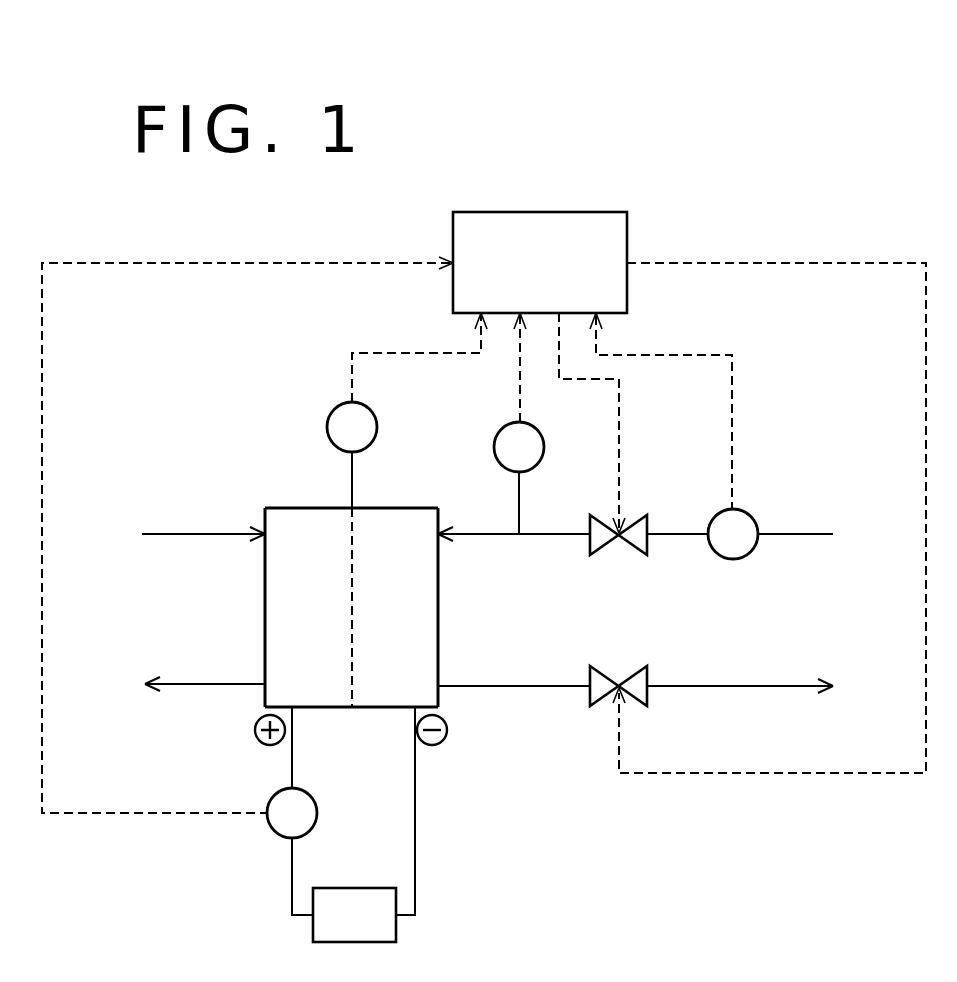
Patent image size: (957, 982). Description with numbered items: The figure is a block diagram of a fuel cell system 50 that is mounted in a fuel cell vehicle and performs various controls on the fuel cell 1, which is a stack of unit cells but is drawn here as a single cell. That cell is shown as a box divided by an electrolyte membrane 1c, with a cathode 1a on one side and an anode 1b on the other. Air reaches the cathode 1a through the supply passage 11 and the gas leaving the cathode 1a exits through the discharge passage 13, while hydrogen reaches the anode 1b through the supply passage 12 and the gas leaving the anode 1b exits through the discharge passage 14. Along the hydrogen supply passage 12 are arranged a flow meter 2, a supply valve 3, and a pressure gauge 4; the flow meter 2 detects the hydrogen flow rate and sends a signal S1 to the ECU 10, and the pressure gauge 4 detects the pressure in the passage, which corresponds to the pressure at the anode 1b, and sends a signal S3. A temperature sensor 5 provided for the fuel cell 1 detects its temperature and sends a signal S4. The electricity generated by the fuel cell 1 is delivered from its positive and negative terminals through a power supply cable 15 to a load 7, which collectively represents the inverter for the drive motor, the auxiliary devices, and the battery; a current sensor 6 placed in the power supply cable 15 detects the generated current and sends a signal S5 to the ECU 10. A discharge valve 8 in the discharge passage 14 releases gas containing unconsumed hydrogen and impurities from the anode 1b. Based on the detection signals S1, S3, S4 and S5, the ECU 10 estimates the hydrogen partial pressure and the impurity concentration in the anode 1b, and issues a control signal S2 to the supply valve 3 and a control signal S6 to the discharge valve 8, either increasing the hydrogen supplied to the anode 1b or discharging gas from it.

The fuel cell 1 is at (318, 478).
The cathode 1a is at (275, 617).
The anode 1b is at (440, 607).
The electrolyte membrane 1c is at (355, 680).
The flow meter 2 is at (734, 560).
The supply valve 3 is at (642, 555).
The pressure gauge 4 is at (495, 446).
The temperature sensor 5 is at (328, 412).
The current sensor 6 is at (272, 830).
The load 7 is at (357, 888).
The discharge valve 8 is at (606, 666).
The ECU 10 is at (537, 212).
The supply passage 11 is at (180, 534).
The supply passage 12 is at (813, 534).
The discharge passage 13 is at (195, 686).
The discharge passage 14 is at (515, 688).
The power supply cable 15 is at (416, 822).
The fuel cell system 50 is at (786, 218).
The signal S1 is at (733, 418).
The control signal S2 is at (619, 420).
The signal S3 is at (519, 381).
The signal S4 is at (365, 352).
The signal S5 is at (42, 368).
The control signal S6 is at (926, 365).